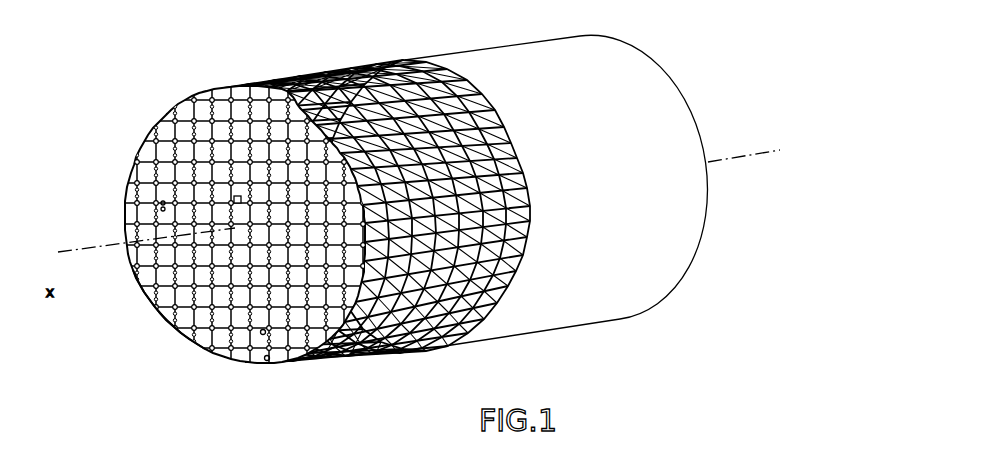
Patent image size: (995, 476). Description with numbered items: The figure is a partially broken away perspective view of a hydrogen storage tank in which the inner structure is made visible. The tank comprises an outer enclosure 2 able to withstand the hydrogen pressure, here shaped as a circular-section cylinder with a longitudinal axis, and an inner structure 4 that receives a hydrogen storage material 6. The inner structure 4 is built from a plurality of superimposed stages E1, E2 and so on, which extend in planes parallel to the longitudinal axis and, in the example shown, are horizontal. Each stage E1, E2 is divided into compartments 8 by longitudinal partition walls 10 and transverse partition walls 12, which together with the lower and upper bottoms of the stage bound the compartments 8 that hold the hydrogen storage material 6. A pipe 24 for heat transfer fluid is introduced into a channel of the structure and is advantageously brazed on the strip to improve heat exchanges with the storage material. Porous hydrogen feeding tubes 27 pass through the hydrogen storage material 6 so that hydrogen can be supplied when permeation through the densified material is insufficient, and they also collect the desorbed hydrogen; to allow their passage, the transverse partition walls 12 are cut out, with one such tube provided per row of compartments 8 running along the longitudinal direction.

The outer enclosure 2 is at (487, 62).
The inner structure 4 is at (301, 224).
The hydrogen storage material 6 is at (234, 199).
The compartment 8 is at (160, 207).
The longitudinal partition wall 10 is at (367, 88).
The transverse partition wall 12 is at (343, 107).
The pipe 24 is at (263, 334).
The porous hydrogen feeding tube 27 is at (267, 361).
The stage E1 is at (180, 337).
The stage E2 is at (146, 313).